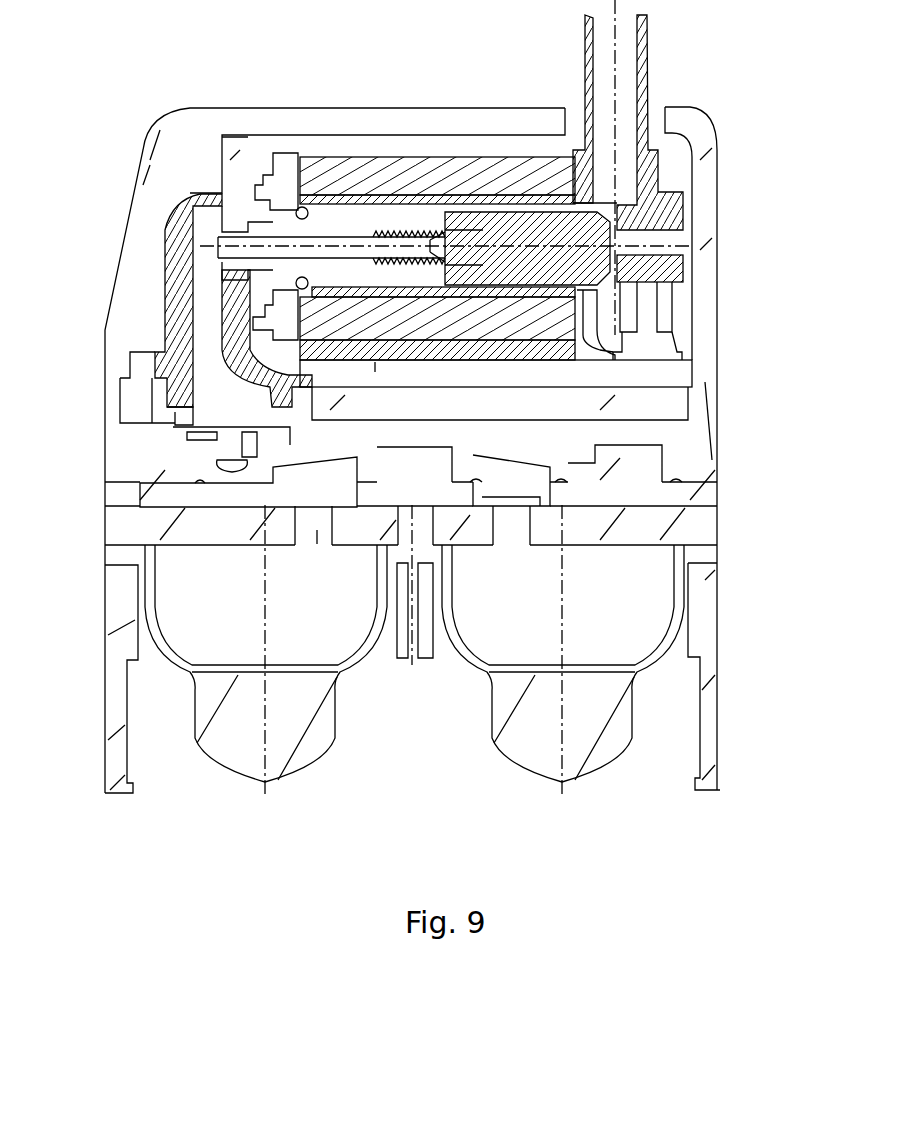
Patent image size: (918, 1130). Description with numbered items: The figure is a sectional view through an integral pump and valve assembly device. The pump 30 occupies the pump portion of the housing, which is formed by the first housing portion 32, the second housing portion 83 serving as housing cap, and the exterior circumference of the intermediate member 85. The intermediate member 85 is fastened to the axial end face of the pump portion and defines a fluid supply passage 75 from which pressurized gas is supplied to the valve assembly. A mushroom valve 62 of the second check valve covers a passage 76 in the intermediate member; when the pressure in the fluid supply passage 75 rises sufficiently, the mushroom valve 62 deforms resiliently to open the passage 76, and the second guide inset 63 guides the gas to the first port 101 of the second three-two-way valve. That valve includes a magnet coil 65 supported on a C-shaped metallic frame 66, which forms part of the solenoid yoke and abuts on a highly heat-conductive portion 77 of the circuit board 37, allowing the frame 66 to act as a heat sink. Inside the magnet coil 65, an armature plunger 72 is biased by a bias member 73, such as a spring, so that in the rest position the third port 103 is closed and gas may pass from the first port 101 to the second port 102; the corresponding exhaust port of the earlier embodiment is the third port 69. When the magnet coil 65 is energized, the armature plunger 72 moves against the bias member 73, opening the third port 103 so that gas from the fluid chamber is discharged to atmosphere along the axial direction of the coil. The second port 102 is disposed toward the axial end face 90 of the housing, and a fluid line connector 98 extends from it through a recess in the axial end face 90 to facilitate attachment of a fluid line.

The pump 30 is at (678, 627).
The first housing portion 32 is at (90, 630).
The circuit board 37 is at (682, 375).
The mushroom valve 62 is at (188, 420).
The second guide inset 63 is at (168, 223).
The magnet coil 65 is at (438, 157).
The metallic frame 66 is at (265, 298).
The third port 69 is at (545, 192).
The armature plunger 72 is at (465, 208).
The bias member 73 is at (408, 229).
The fluid supply passage 75 is at (263, 472).
The passage 76 is at (268, 436).
The portion of the circuit board 77 is at (375, 363).
The second housing portion 83 is at (113, 257).
The intermediate member 85 is at (720, 523).
The axial end face 90 is at (320, 107).
The fluid line connector 98 is at (643, 43).
The first port 101 is at (228, 247).
The second port 102 is at (600, 203).
The third port 103 is at (653, 239).